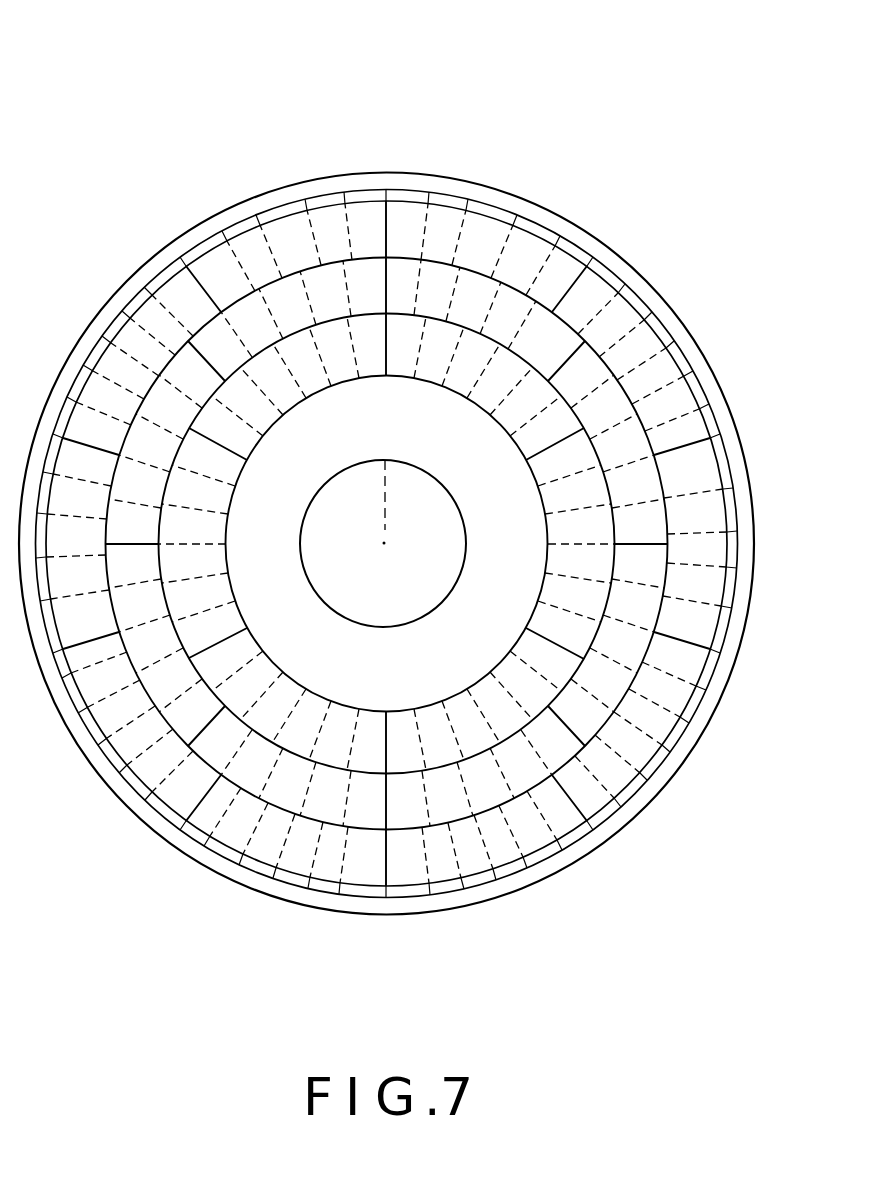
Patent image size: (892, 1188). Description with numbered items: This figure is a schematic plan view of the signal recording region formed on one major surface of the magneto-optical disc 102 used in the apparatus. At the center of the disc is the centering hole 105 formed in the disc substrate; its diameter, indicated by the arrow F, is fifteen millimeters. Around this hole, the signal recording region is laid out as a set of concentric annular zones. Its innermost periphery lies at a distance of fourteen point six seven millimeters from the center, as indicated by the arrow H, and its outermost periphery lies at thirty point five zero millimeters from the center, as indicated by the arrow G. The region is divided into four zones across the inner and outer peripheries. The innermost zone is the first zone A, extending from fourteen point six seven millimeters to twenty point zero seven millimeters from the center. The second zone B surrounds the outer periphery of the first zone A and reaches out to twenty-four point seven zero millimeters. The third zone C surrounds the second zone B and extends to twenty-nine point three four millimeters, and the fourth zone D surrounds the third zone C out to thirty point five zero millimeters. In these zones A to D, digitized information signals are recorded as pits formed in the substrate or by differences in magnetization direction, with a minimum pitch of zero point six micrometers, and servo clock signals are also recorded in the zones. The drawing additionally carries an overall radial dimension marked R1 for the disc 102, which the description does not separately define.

The magneto-optical disc 102 is at (657, 283).
The centering hole 105 is at (320, 595).
The first zone A is at (396, 743).
The second zone B is at (392, 808).
The third zone C is at (392, 864).
The fourth zone D is at (388, 899).
The outer radius dimension R1 is at (755, 520).
The arrow F is at (471, 525).
The arrow G is at (737, 503).
The arrow H is at (553, 512).